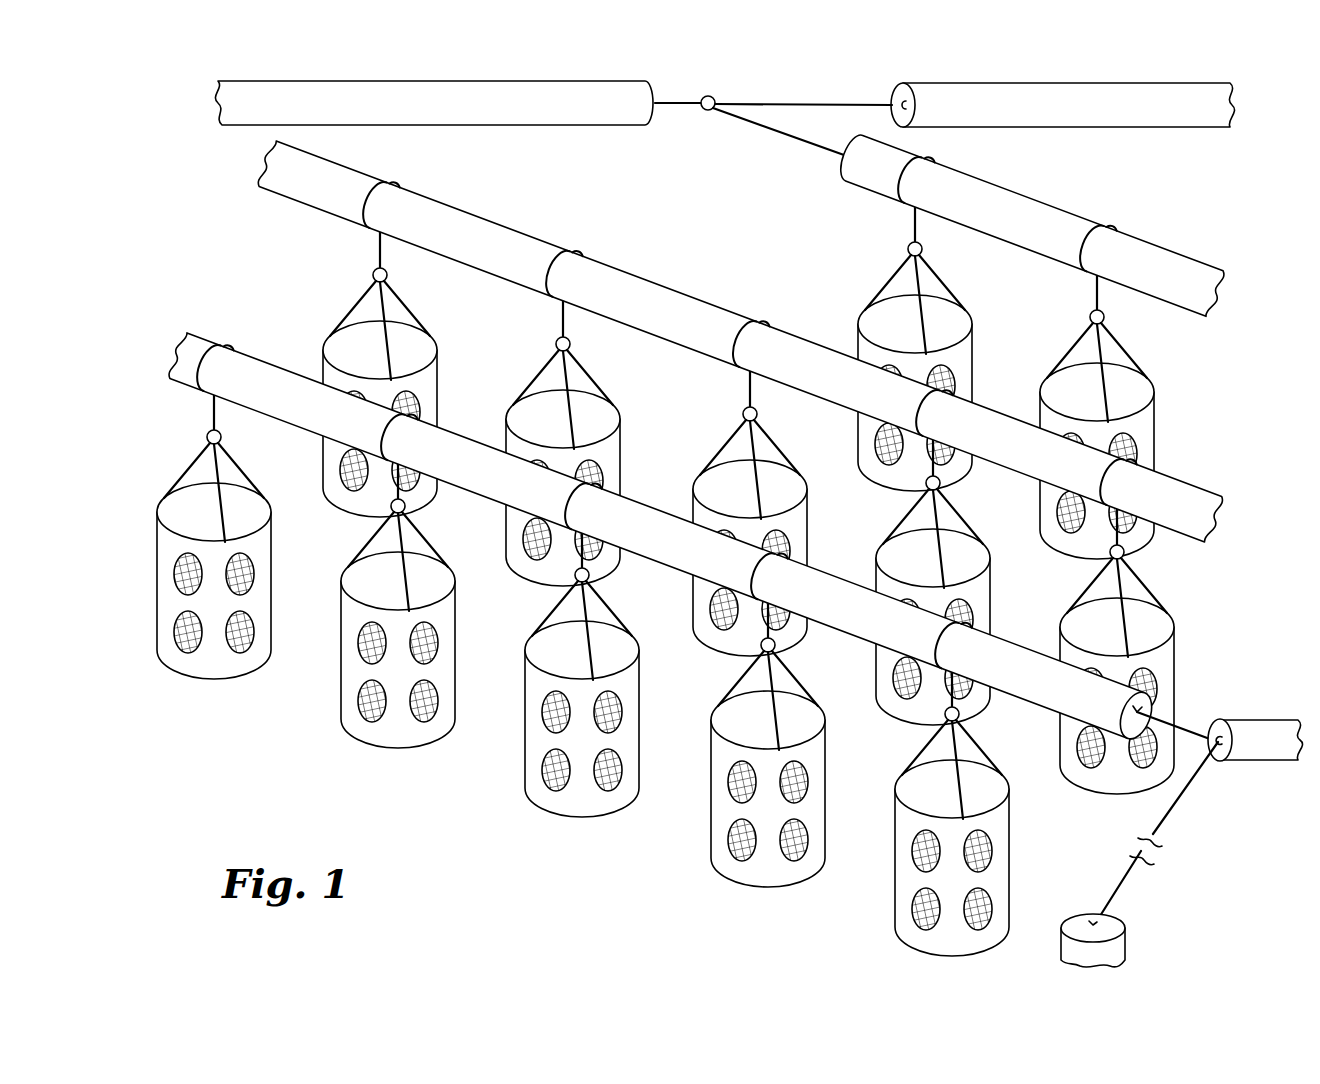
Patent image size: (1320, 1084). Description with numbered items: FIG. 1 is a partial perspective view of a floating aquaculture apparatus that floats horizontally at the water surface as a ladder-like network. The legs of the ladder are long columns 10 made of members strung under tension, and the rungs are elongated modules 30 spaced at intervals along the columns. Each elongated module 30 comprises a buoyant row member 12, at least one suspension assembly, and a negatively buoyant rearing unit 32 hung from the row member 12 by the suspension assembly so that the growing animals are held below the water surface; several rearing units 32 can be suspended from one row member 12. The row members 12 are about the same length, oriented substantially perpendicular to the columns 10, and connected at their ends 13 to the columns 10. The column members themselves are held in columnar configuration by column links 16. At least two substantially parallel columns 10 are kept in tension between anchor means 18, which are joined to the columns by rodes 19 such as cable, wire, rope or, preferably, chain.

The column 10 is at (518, 127).
The row member 12 is at (631, 279).
The row member end 13 is at (838, 172).
The column link 16 is at (707, 112).
The anchor means 18 is at (1133, 945).
The rode 19 is at (1190, 788).
The elongated module 30 is at (452, 205).
The rearing unit 32 is at (710, 830).